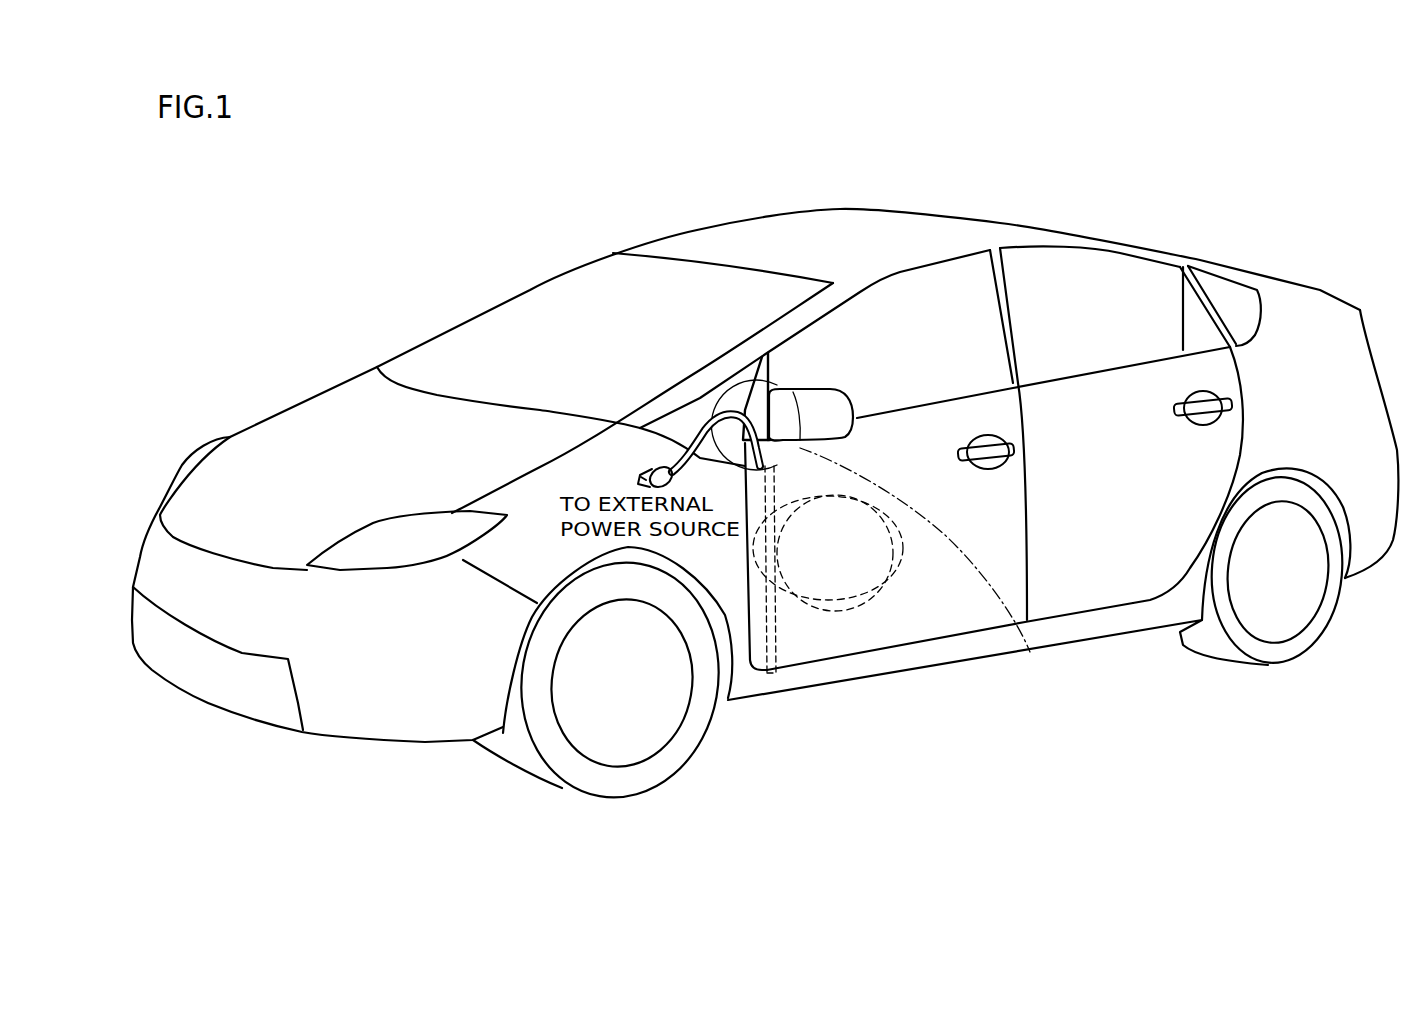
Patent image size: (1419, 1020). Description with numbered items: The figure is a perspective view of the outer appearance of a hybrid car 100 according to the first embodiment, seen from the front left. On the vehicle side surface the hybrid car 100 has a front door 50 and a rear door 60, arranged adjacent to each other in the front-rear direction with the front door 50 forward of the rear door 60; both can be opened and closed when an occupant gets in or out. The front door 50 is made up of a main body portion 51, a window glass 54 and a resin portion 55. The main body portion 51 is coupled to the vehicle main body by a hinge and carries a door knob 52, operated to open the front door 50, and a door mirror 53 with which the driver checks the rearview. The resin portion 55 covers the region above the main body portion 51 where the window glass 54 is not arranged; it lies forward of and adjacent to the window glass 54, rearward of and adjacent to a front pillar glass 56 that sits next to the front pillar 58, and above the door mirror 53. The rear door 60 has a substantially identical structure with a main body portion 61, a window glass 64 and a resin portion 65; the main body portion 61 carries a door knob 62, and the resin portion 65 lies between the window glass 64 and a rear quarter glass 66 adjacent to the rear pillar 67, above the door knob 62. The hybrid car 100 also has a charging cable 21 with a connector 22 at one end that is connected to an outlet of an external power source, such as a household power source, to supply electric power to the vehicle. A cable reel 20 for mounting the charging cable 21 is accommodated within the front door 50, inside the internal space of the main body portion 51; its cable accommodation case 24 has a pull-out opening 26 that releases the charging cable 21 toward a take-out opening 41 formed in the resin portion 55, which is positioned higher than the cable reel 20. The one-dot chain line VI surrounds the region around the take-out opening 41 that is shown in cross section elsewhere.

The hybrid car 100 is at (548, 207).
The cable reel 20 is at (840, 575).
The charging cable 21 is at (690, 452).
The connector 22 is at (648, 464).
The cable accommodation case 24 is at (887, 555).
The pull-out opening 26 is at (767, 676).
The take-out opening 41 is at (727, 396).
The front door 50 is at (917, 436).
The main body portion 51 is at (927, 560).
The door knob 52 is at (990, 442).
The door mirror 53 is at (812, 412).
The window glass 54 is at (880, 312).
The resin portion 55 is at (735, 388).
The front pillar glass 56 is at (730, 432).
The front pillar 58 is at (718, 445).
The rear door 60 is at (1107, 402).
The main body portion 61 is at (1097, 537).
The door knob 62 is at (1195, 404).
The window glass 64 is at (1061, 278).
The resin portion 65 is at (1196, 312).
The rear quarter glass 66 is at (1240, 312).
The rear pillar 67 is at (1218, 270).
The one-dot chain line VI is at (1008, 593).